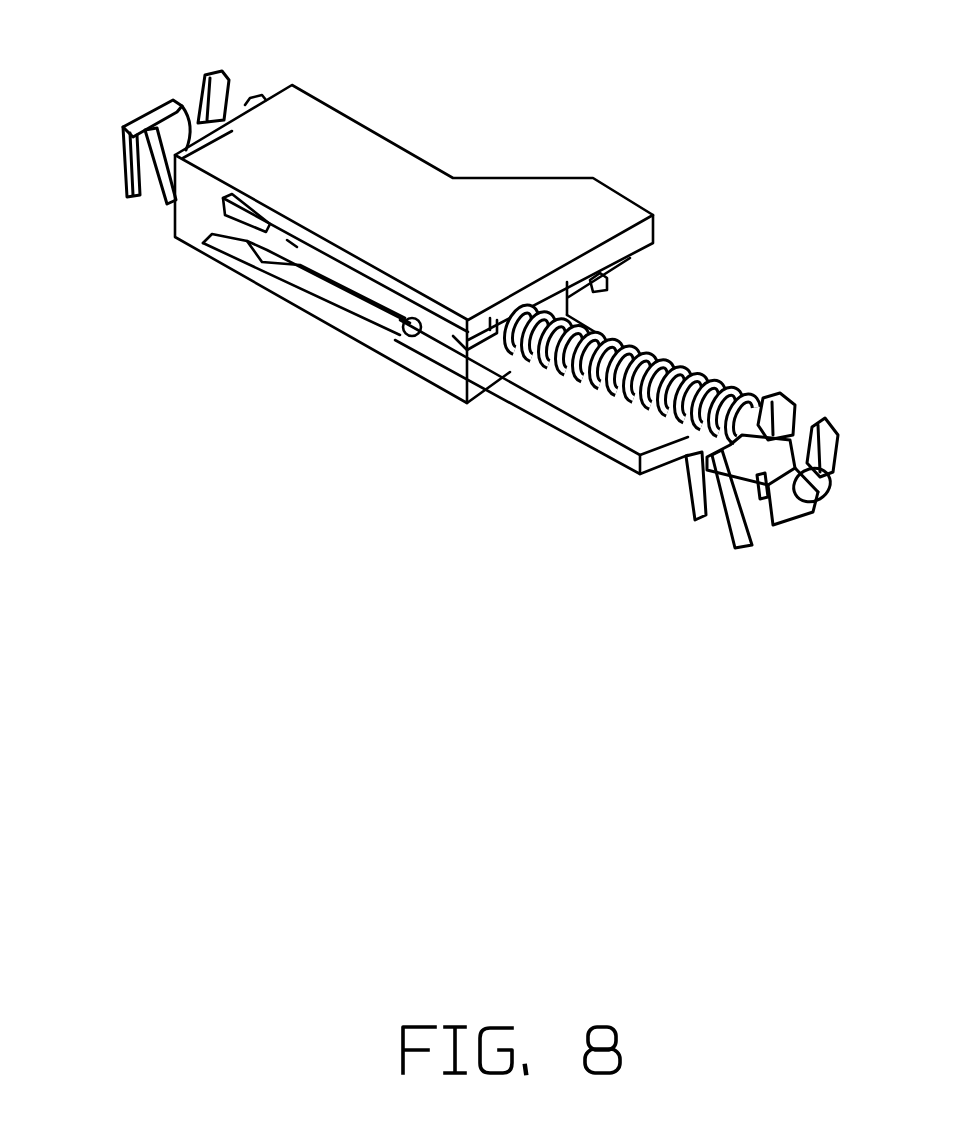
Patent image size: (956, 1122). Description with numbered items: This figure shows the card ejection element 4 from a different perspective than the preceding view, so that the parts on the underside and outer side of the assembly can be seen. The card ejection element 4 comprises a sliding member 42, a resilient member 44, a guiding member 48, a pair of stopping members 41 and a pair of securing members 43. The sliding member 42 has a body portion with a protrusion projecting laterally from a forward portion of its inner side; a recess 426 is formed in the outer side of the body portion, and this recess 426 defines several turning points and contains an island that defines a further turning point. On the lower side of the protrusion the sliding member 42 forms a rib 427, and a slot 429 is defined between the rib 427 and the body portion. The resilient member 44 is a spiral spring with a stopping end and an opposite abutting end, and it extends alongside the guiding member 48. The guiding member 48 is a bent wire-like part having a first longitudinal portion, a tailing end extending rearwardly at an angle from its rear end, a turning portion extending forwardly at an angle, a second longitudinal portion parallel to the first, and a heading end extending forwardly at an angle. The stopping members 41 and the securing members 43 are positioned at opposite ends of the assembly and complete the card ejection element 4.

The card ejection element 4 is at (523, 152).
The stopping member 41 is at (690, 493).
The sliding member 42 is at (348, 148).
The securing member 43 is at (165, 118).
The resilient member 44 is at (677, 377).
The guiding member 48 is at (543, 407).
The recess 426 is at (347, 320).
The rib 427 is at (607, 290).
The slot 429 is at (573, 300).